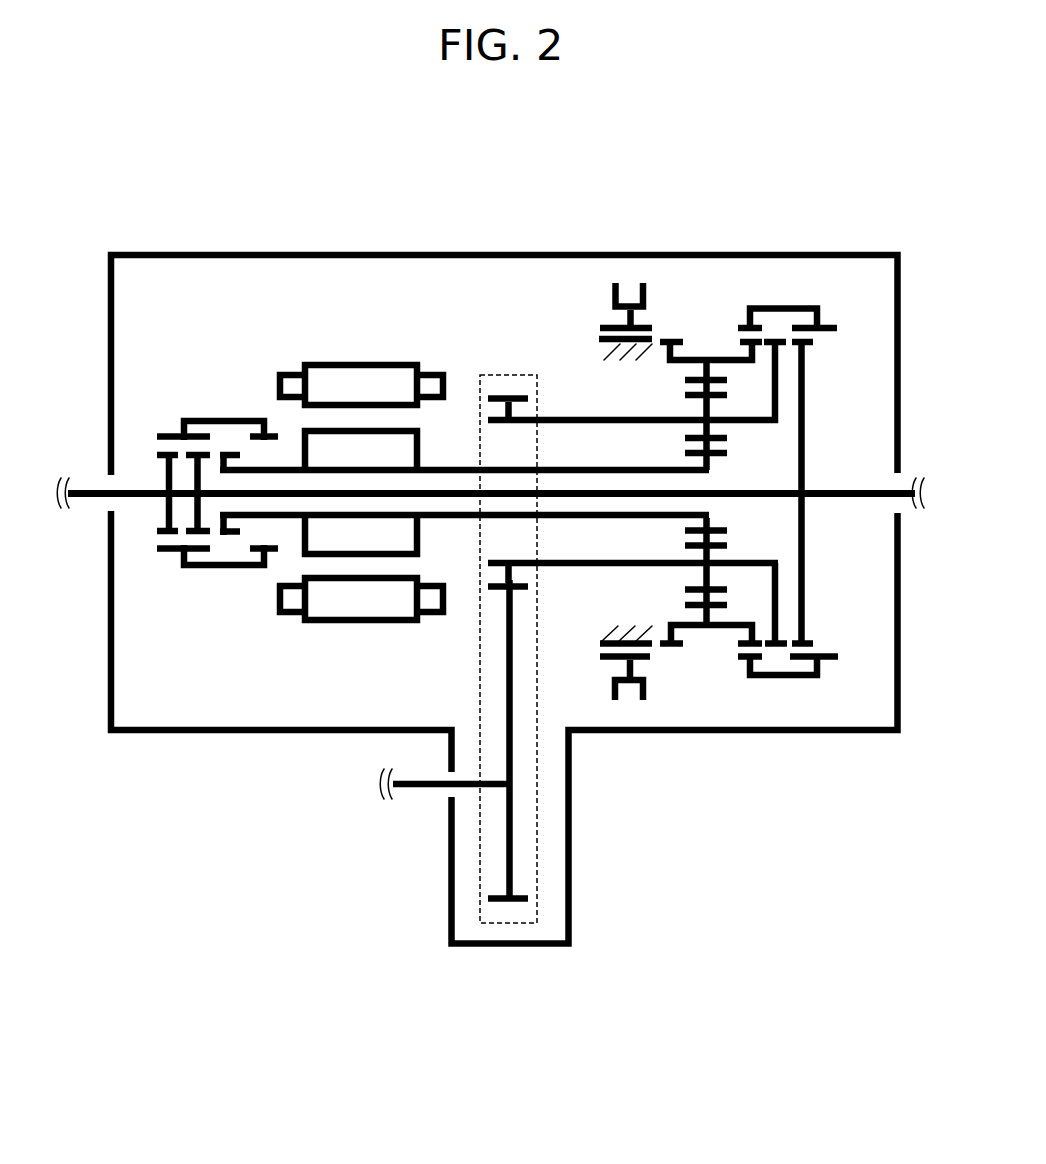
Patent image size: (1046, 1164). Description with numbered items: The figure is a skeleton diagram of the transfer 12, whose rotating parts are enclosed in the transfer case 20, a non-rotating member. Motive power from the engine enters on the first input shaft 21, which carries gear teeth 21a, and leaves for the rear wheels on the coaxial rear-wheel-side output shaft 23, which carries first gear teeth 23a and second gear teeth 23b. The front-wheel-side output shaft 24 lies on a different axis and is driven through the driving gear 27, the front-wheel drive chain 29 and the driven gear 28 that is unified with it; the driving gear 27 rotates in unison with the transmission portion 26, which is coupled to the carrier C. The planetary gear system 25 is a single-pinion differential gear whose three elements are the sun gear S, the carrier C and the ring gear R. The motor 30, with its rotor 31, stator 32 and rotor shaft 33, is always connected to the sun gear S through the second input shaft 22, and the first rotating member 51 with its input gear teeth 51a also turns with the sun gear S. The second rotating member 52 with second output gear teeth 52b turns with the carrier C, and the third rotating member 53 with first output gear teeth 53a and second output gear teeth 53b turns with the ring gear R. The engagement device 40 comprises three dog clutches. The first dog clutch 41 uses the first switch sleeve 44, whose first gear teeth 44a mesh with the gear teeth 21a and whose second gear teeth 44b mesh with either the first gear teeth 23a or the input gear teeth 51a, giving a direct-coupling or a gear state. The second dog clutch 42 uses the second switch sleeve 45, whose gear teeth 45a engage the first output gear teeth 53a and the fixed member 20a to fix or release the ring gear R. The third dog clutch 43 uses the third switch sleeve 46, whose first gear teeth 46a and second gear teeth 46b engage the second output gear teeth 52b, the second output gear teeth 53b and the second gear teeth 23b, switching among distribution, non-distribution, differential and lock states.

The transfer 12 is at (498, 210).
The transfer case 20 is at (146, 252).
The fixed member 20a is at (601, 364).
The first input shaft 21 is at (92, 501).
The gear teeth 21a is at (158, 532).
The second input shaft 22 is at (550, 467).
The rear-wheel-side output shaft 23 is at (903, 511).
The first gear teeth 23a is at (212, 533).
The second gear teeth 23b is at (814, 644).
The front-wheel-side output shaft 24 is at (421, 789).
The planetary gear system 25 is at (712, 325).
The transmission portion 26 is at (557, 412).
The driving gear 27 is at (497, 394).
The driven gear 28 is at (523, 903).
The front-wheel drive chain 29 is at (537, 852).
The motor 30 is at (361, 451).
The rotor 31 is at (323, 443).
The stator 32 is at (404, 377).
The rotor shaft 33 is at (462, 467).
The engagement device 40 is at (162, 400).
The first dog clutch 41 is at (162, 426).
The second dog clutch 42 is at (633, 283).
The third dog clutch 43 is at (799, 258).
The first switch sleeve 44 is at (195, 408).
The first gear teeth 44a is at (158, 440).
The second gear teeth 44b is at (252, 438).
The second switch sleeve 45 is at (619, 274).
The gear teeth 45a is at (648, 337).
The third switch sleeve 46 is at (765, 302).
The first gear teeth 46a is at (739, 328).
The second gear teeth 46b is at (834, 337).
The first rotating member 51 is at (290, 463).
The input gear teeth 51a is at (233, 533).
The second rotating member 52 is at (735, 675).
The second output gear teeth 52b is at (776, 650).
The third rotating member 53 is at (681, 671).
The first output gear teeth 53a is at (669, 648).
The second output gear teeth 53b is at (745, 649).
The ring gear R is at (718, 373).
The sun gear S is at (688, 457).
The carrier C is at (750, 424).